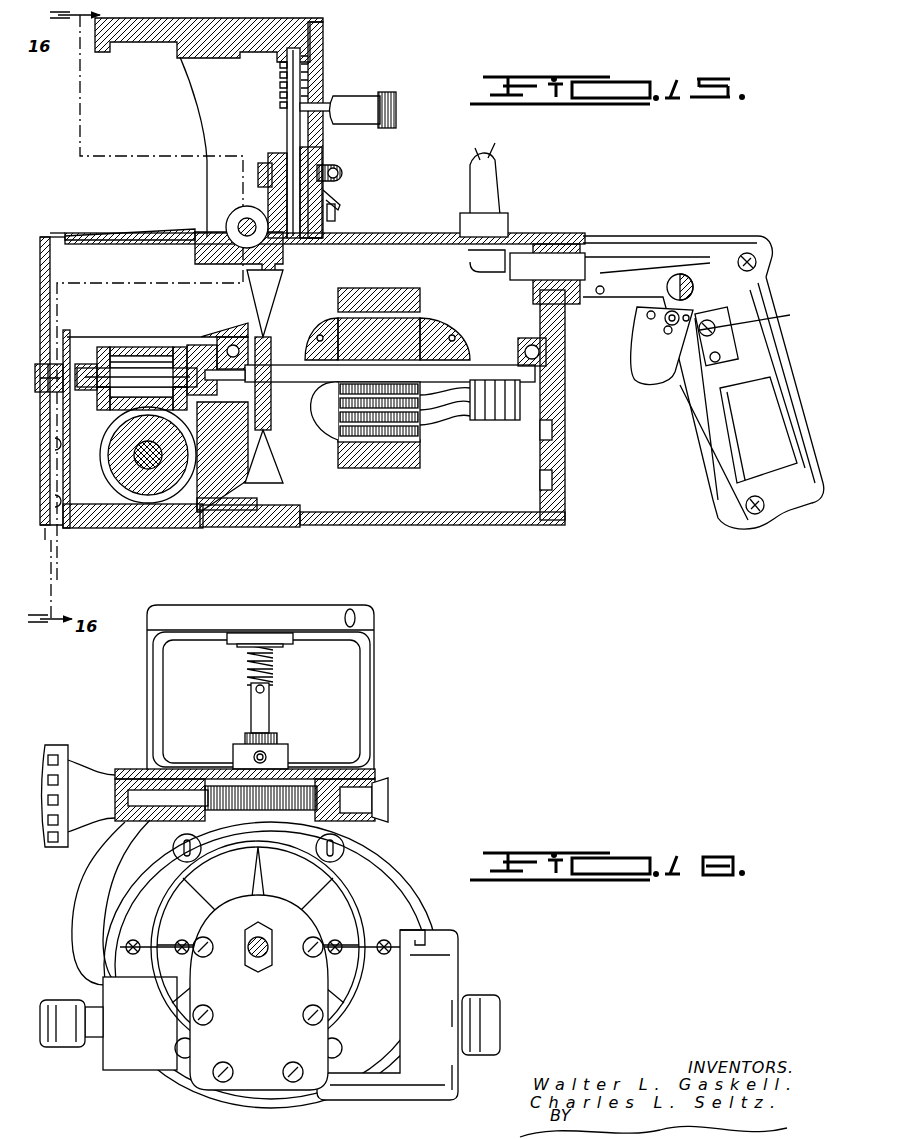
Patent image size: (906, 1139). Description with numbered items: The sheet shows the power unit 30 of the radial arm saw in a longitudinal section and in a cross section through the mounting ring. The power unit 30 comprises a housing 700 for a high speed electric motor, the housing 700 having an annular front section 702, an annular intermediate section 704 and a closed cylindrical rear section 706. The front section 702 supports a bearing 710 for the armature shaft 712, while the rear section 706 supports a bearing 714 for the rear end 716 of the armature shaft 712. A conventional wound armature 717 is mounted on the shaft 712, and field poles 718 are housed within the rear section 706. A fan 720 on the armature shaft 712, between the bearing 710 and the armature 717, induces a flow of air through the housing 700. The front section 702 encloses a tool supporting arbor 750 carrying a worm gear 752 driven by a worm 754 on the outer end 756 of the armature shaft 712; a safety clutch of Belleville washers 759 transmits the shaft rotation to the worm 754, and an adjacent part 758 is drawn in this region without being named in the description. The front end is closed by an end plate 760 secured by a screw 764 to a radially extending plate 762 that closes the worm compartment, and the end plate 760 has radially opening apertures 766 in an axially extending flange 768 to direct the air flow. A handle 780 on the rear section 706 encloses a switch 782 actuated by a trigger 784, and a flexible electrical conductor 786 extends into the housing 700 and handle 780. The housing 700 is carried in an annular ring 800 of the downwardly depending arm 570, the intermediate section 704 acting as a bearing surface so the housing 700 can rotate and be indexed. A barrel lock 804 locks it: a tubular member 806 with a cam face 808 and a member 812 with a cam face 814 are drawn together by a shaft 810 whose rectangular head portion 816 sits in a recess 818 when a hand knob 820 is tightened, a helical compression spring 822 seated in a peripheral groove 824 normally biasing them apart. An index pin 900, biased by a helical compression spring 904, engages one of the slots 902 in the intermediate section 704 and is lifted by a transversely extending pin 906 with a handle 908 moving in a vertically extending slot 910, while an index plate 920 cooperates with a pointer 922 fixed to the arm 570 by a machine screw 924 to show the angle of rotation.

In FIG. 15, the power unit 30 is at (592, 236).
In FIG. 15, the downwardly depending arm 570 is at (203, 118).
In FIG. 15, the housing 700 is at (432, 222).
In FIG. 15, the annular front section 702 is at (100, 233).
In FIG. 15, the annular intermediate section 704 is at (303, 527).
In FIG. 15, the closed cylindrical rear section 706 is at (440, 525).
In FIG. 15, the bearing 710 is at (240, 337).
In FIG. 15, the armature shaft 712 is at (265, 362).
In FIG. 15, the bearing 714 is at (505, 420).
In FIG. 15, the rear end 716 is at (528, 345).
In FIG. 15, the wound armature 717 is at (438, 320).
In FIG. 15, the field poles 718 is at (398, 288).
In FIG. 15, the fan 720 is at (290, 296).
In FIG. 16, the fan 720 is at (340, 902).
In FIG. 15, the tool supporting arbor 750 is at (147, 466).
In FIG. 15, the worm gear 752 is at (108, 493).
In FIG. 15, the worm 754 is at (150, 347).
In FIG. 15, the outer end 756 is at (110, 347).
In FIG. 15, the bearing 758 is at (142, 357).
In FIG. 15, the Belleville washers 759 is at (190, 345).
In FIG. 15, the end plate 760 is at (45, 250).
In FIG. 15, the radially extending plate 762 is at (110, 398).
In FIG. 16, the radially extending plate 762 is at (198, 985).
In FIG. 15, the screw 764 is at (47, 363).
In FIG. 15, the apertures 766 is at (55, 530).
In FIG. 15, the axially extending flange 768 is at (65, 236).
In FIG. 15, the handle 780 is at (774, 296).
In FIG. 15, the switch 782 is at (735, 460).
In FIG. 15, the trigger 784 is at (662, 388).
In FIG. 15, the flexible electrical conductor 786 is at (508, 195).
In FIG. 15, the annular ring 800 is at (210, 215).
In FIG. 16, the annular ring 800 is at (412, 862).
In FIG. 16, the barrel lock 804 is at (98, 770).
In FIG. 16, the tubular member 806 is at (128, 778).
In FIG. 16, the cam face 808 is at (200, 834).
In FIG. 16, the shaft 810 is at (172, 800).
In FIG. 16, the member 812 is at (337, 778).
In FIG. 16, the cam face 814 is at (260, 894).
In FIG. 16, the rectangular head portion 816 is at (385, 790).
In FIG. 16, the recess 818 is at (388, 810).
In FIG. 16, the hand knob 820 is at (50, 845).
In FIG. 16, the helical compression spring 822 is at (278, 790).
In FIG. 15, the peripheral groove 824 is at (245, 527).
In FIG. 15, the index pin 900 is at (312, 140).
In FIG. 16, the index pin 900 is at (276, 700).
In FIG. 15, the slots 902 is at (312, 246).
In FIG. 15, the helical compression spring 904 is at (312, 62).
In FIG. 16, the helical compression spring 904 is at (283, 660).
In FIG. 15, the transversely extending pin 906 is at (330, 104).
In FIG. 15, the handle 908 is at (388, 92).
In FIG. 15, the vertically extending slot 910 is at (313, 78).
In FIG. 15, the index plate 920 is at (338, 216).
In FIG. 15, the pointer 922 is at (340, 198).
In FIG. 15, the machine screw 924 is at (342, 172).